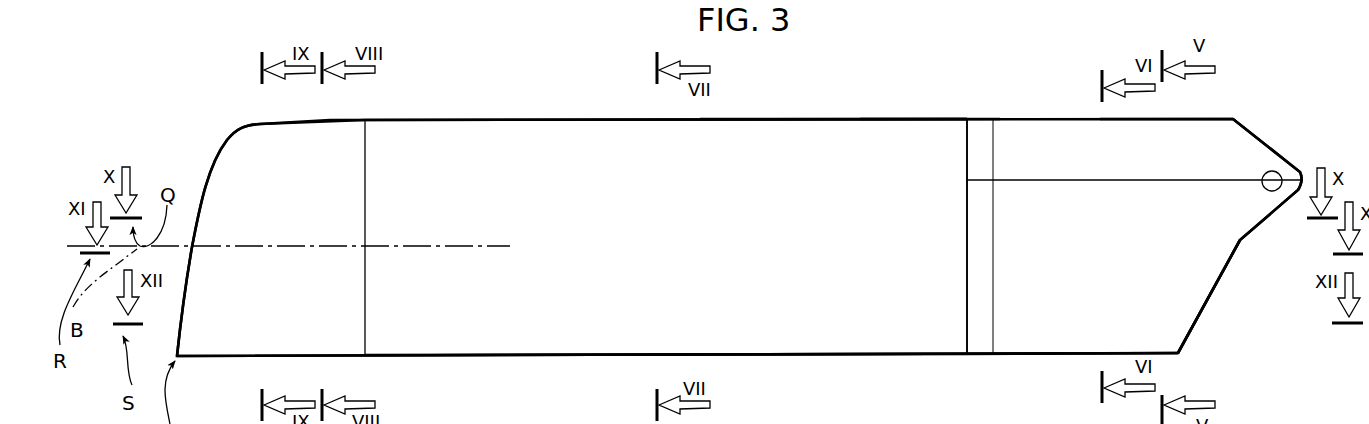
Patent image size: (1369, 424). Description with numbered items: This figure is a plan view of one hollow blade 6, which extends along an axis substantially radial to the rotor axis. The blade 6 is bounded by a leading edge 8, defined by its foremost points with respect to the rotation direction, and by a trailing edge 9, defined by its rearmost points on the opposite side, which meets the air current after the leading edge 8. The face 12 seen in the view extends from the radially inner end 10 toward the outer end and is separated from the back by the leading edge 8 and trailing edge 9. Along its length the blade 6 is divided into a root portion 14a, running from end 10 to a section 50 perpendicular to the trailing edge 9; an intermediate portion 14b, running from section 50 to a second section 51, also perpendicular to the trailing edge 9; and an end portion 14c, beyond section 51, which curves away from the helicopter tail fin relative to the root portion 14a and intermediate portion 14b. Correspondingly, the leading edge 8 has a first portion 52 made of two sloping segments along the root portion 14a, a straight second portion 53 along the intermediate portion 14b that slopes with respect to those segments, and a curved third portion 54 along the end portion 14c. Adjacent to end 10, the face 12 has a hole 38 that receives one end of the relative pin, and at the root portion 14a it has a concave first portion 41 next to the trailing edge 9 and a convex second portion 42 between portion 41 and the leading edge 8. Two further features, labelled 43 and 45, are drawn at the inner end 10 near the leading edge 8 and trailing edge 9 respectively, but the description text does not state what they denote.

The leading edge 8 is at (162, 130).
The end portion 14c is at (257, 145).
The curved third portion 54 is at (325, 117).
The section 51 is at (367, 335).
The intermediate portion 14b is at (425, 152).
The face 12 is at (592, 180).
The blade 6 is at (868, 90).
The straight second portion 53 is at (910, 117).
The convex second portion 42 is at (1017, 130).
The section 50 is at (967, 337).
The root portion 14a is at (1080, 215).
The concave first portion 41 is at (1053, 313).
The trailing edge 9 is at (550, 360).
The first portion 52 is at (1170, 117).
The front inclined surface 43 is at (1227, 178).
The hole 38 is at (1262, 190).
The end 10 is at (1242, 264).
The lower inclined surface 45 is at (1208, 300).